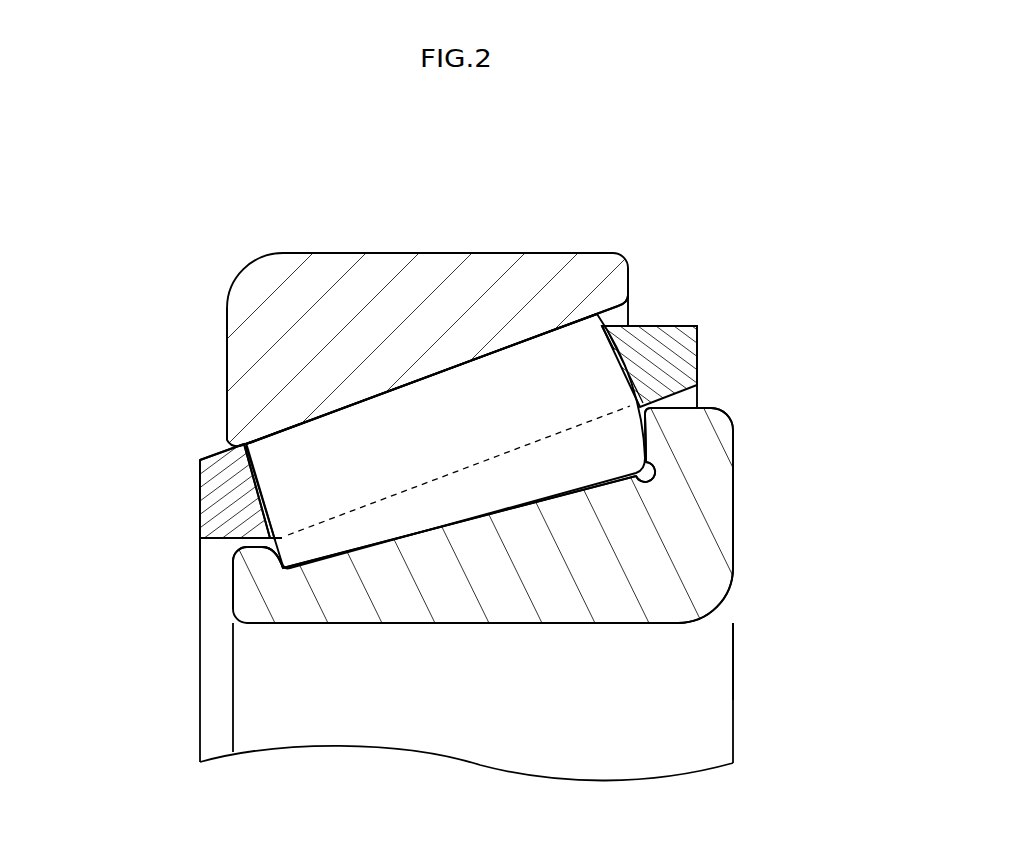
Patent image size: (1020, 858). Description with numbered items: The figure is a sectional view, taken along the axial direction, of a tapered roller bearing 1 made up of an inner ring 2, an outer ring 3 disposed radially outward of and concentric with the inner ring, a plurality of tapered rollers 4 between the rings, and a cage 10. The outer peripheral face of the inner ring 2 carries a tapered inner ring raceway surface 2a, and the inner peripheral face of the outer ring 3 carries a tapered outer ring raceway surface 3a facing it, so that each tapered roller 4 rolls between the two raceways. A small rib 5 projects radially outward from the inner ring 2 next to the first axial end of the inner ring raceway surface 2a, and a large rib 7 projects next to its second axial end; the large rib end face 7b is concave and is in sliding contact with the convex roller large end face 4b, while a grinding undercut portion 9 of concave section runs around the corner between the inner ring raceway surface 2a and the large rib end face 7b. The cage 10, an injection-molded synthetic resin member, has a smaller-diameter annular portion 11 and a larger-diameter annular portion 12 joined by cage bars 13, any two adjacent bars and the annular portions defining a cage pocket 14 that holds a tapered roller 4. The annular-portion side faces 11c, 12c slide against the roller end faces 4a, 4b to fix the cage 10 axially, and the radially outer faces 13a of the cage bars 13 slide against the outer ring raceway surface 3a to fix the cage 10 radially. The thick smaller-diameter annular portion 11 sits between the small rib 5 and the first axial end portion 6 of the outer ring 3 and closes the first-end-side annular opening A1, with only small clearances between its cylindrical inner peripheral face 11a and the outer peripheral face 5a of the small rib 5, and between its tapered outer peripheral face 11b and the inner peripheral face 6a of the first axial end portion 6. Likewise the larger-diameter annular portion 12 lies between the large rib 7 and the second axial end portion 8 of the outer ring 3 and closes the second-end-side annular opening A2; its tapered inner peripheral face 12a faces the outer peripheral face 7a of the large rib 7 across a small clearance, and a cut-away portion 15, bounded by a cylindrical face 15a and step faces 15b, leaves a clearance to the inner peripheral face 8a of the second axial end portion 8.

The tapered roller bearing 1 is at (707, 200).
The inner ring 2 is at (521, 623).
The inner ring raceway surface 2a is at (407, 526).
The outer ring 3 is at (333, 253).
The outer ring raceway surface 3a is at (466, 374).
The tapered roller 4 is at (288, 424).
The roller end face 4a is at (248, 578).
The roller large end face 4b is at (650, 448).
The small rib 5 is at (247, 572).
The outer peripheral face of the small rib 5a is at (277, 521).
The first axial end portion of the outer ring 6 is at (242, 418).
The inner peripheral face of the first axial end portion 6a is at (200, 473).
The large rib 7 is at (718, 447).
The outer peripheral face of the large rib 7a is at (705, 408).
The large rib end face 7b is at (640, 444).
The second axial end portion of the outer ring 8 is at (628, 263).
The inner peripheral face of the second axial end portion 8a is at (630, 308).
The grinding undercut portion 9 is at (638, 475).
The cage 10 is at (700, 345).
The smaller-diameter annular portion 11 is at (198, 495).
The inner peripheral face of the smaller-diameter annular portion 11a is at (227, 540).
The outer peripheral face of the smaller-diameter annular portion 11b is at (214, 452).
The annular-portion side face 11c is at (253, 457).
The larger-diameter annular portion 12 is at (700, 327).
The inner peripheral face of the larger-diameter annular portion 12a is at (700, 396).
The annular-portion side face 12c is at (615, 338).
The cage bar 13 is at (532, 382).
The radially outer face of the cage bar 13a is at (410, 368).
The cage pocket 14 is at (260, 507).
The cut-away portion 15 is at (658, 326).
The cylindrical face 15a is at (685, 326).
The step face 15b is at (598, 312).
The first-end-side annular opening A1 is at (130, 550).
The second-end-side annular opening A2 is at (802, 303).